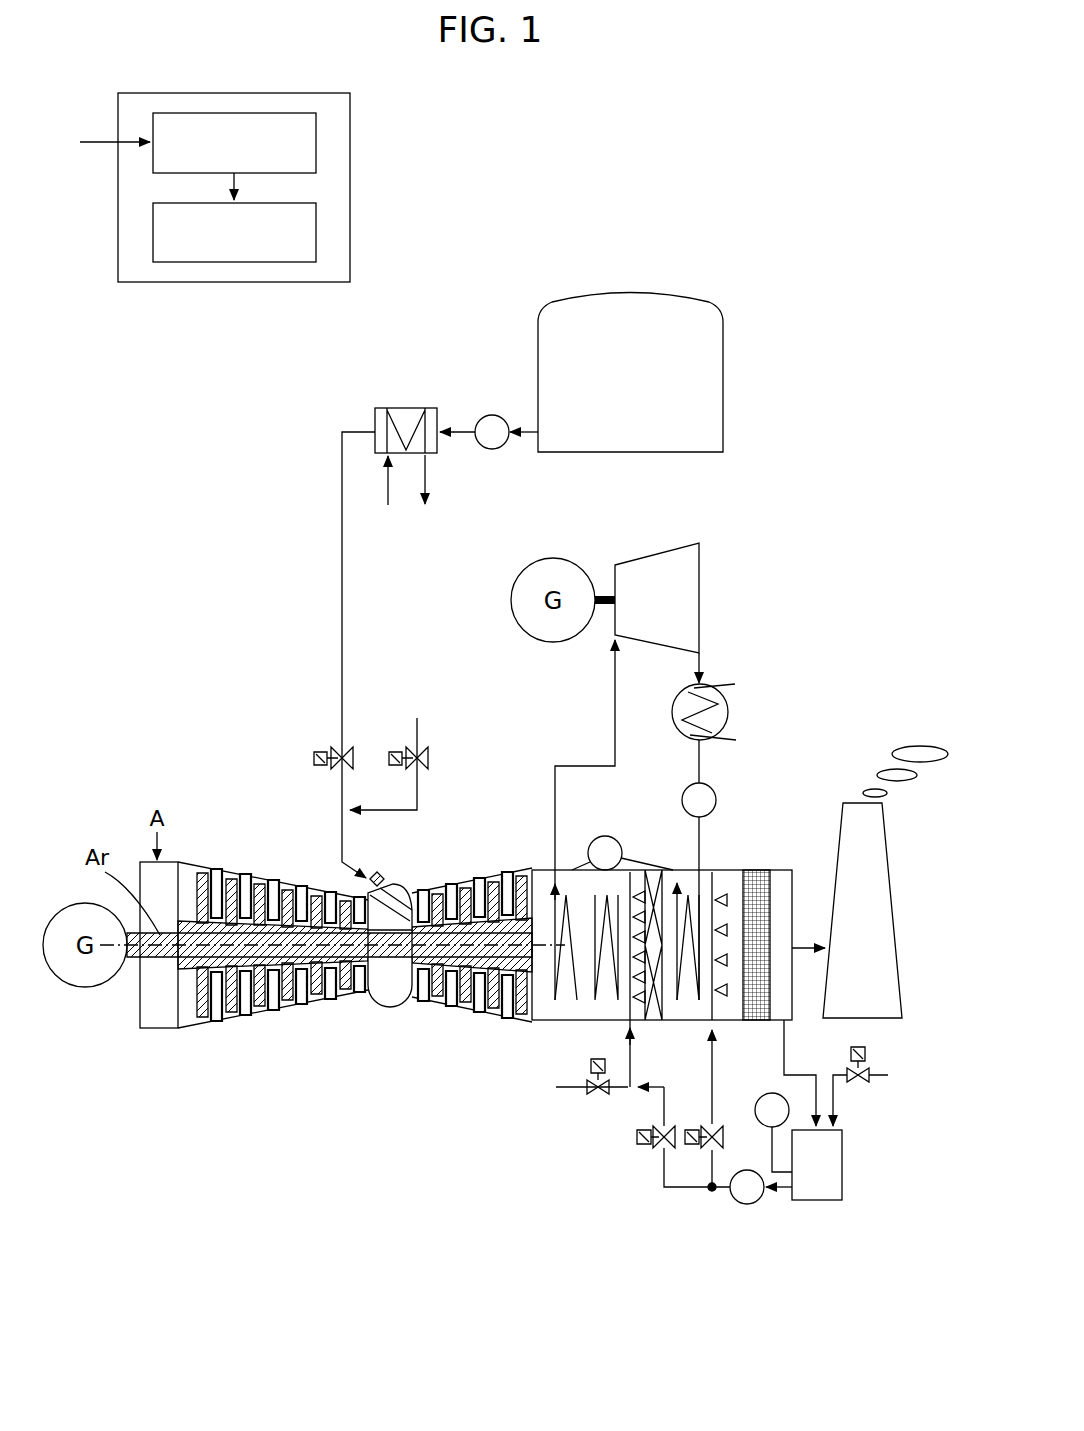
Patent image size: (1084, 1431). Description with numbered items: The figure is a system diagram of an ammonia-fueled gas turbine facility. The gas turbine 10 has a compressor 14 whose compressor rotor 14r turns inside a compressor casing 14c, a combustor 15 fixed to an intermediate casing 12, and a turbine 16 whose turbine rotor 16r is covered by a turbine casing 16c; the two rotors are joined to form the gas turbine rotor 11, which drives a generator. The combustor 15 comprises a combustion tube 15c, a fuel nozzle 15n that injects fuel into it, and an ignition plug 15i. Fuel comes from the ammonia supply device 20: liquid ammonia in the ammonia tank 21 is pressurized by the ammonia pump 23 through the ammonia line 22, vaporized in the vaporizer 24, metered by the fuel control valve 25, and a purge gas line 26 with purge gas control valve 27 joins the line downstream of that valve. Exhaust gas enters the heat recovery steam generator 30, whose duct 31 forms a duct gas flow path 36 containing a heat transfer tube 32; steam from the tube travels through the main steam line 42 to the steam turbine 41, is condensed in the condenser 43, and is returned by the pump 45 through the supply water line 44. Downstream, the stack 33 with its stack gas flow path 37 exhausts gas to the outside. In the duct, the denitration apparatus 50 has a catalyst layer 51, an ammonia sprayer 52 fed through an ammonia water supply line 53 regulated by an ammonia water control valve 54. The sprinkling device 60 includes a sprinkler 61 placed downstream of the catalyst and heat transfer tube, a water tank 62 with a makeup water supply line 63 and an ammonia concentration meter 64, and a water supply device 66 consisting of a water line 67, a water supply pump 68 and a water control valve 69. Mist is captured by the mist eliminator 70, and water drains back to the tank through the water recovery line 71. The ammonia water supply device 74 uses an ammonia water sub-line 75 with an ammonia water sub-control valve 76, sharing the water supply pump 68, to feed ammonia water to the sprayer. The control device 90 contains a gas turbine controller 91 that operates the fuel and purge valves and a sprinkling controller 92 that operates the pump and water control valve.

The gas turbine 10 is at (254, 860).
The gas turbine rotor 11 is at (386, 975).
The intermediate casing 12 is at (346, 1000).
The compressor 14 is at (256, 1001).
The compressor rotor 14r is at (190, 1020).
The compressor casing 14c is at (288, 981).
The combustor 15 is at (445, 893).
The fuel nozzle 15n is at (393, 855).
The ignition plug 15i is at (392, 900).
The combustion tube 15c is at (412, 898).
The turbine 16 is at (452, 1003).
The turbine rotor 16r is at (438, 1000).
The turbine casing 16c is at (465, 983).
The ammonia supply device 20 is at (336, 440).
The ammonia tank 21 is at (723, 372).
The ammonia line 22 is at (340, 548).
The ammonia pump 23 is at (490, 412).
The vaporizer 24 is at (406, 406).
The fuel control valve 25 is at (336, 745).
The purge gas line 26 is at (412, 732).
The purge gas control valve 27 is at (422, 745).
The heat recovery steam generator 30 is at (820, 783).
The duct 31 is at (733, 870).
The heat transfer tube 32 is at (688, 902).
The stack 33 is at (886, 820).
The duct gas flow path 36 is at (582, 905).
The stack gas flow path 37 is at (878, 930).
The steam turbine 41 is at (660, 545).
The main steam line 42 is at (583, 766).
The condenser 43 is at (712, 688).
The supply water line 44 is at (697, 745).
The pump 45 is at (682, 800).
The denitration apparatus 50 is at (447, 1165).
The catalyst layer 51 is at (638, 1095).
The ammonia sprayer 52 is at (626, 962).
The ammonia water supply line 53 is at (566, 1090).
The ammonia water control valve 54 is at (594, 1096).
The sprinkling device 60 is at (722, 1022).
The sprinkler 61 is at (702, 1022).
The water tank 62 is at (823, 1192).
The makeup water supply line 63 is at (880, 1078).
The ammonia concentration meter 64 is at (756, 1100).
The water supply device 66 is at (845, 1288).
The water line 67 is at (700, 1196).
The water supply pump 68 is at (755, 1200).
The water control valve 69 is at (720, 1200).
The mist eliminator 70 is at (768, 896).
The water recovery line 71 is at (790, 1036).
The ammonia water supply device 74 is at (665, 1288).
The ammonia water sub-line 75 is at (670, 1190).
The ammonia water sub-control valve 76 is at (660, 1145).
The control device 90 is at (116, 237).
The gas turbine controller 91 is at (316, 140).
The sprinkling controller 92 is at (316, 224).